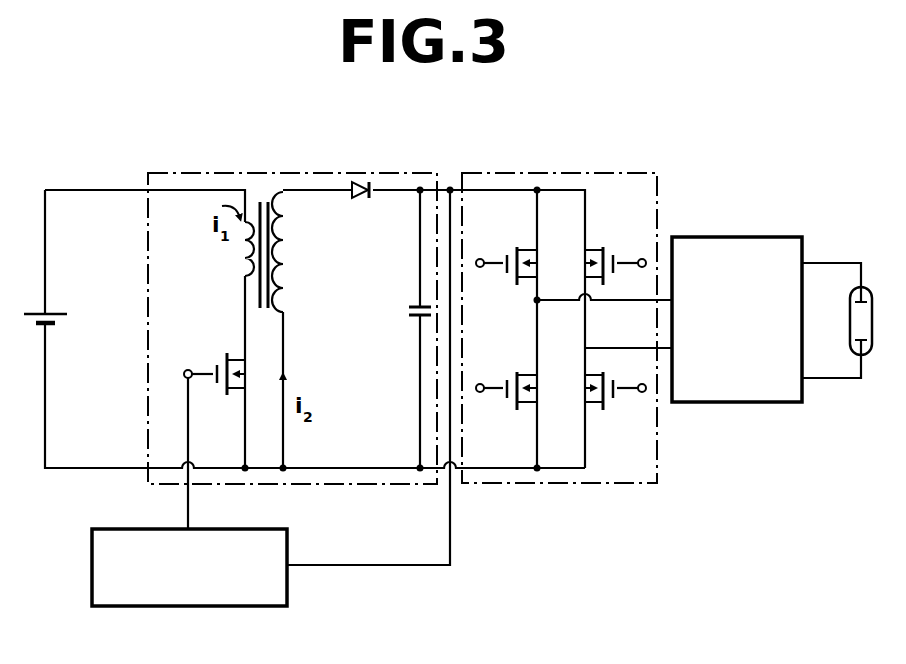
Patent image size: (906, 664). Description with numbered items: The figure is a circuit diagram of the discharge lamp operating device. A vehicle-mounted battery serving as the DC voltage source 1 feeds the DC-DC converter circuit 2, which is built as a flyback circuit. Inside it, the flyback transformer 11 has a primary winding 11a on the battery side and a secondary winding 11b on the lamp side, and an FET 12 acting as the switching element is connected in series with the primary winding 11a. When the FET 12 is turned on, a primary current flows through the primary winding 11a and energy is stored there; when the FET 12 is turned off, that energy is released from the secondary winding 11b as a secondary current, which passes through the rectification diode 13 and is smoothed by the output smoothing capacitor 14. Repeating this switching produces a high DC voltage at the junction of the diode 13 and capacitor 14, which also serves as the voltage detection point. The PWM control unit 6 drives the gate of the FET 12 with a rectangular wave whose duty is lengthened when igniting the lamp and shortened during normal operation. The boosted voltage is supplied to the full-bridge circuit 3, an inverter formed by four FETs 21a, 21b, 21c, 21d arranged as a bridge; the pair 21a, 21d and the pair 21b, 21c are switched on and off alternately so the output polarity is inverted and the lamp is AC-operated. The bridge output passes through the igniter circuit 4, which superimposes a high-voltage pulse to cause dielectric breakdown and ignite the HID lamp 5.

The DC voltage source 1 is at (40, 326).
The DC-DC converter circuit 2 is at (185, 172).
The full-bridge circuit 3 is at (604, 172).
The igniter circuit 4 is at (738, 236).
The HID lamp 5 is at (866, 290).
The PWM control unit 6 is at (110, 607).
The flyback transformer 11 is at (262, 217).
The primary winding 11a is at (247, 262).
The secondary winding 11b is at (285, 256).
The FET 12 is at (214, 366).
The rectification diode 13 is at (363, 181).
The output smoothing capacitor 14 is at (418, 306).
The FET 21a is at (506, 252).
The FET 21b is at (506, 376).
The FET 21c is at (616, 252).
The FET 21d is at (615, 400).